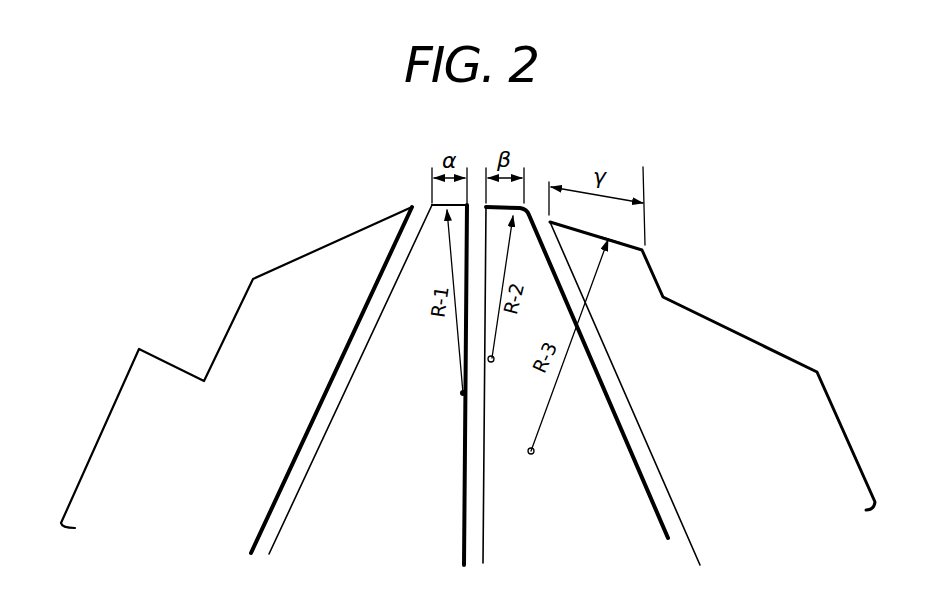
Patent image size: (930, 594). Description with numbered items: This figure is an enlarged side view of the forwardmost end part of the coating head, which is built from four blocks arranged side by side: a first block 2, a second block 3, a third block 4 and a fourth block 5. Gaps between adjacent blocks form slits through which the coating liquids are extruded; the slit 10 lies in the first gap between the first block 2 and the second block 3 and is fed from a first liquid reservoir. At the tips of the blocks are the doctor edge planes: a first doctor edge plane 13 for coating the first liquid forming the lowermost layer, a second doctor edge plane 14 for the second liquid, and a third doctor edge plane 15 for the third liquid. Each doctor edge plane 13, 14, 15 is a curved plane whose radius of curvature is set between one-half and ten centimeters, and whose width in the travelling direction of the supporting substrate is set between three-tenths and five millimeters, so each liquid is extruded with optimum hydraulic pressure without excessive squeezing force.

The first block 2 is at (258, 412).
The second block 3 is at (407, 402).
The third block 4 is at (565, 418).
The fourth block 5 is at (672, 350).
The slit 10 is at (303, 459).
The first doctor edge plane 13 is at (432, 205).
The second doctor edge plane 14 is at (485, 206).
The third doctor edge plane 15 is at (606, 224).